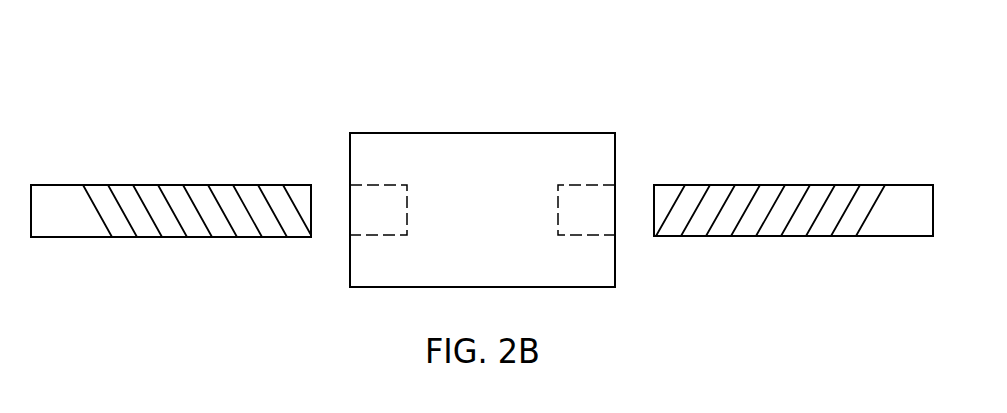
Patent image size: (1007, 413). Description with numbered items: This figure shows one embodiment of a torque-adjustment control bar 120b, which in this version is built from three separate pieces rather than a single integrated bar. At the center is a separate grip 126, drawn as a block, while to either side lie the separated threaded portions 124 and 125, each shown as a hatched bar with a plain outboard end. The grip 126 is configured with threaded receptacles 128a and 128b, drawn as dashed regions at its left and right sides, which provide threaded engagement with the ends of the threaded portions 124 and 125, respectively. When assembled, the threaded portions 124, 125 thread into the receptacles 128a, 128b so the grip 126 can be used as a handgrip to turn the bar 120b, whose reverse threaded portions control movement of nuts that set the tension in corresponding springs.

The bar 120b is at (127, 75).
The threaded portion 124 is at (197, 192).
The threaded portion 125 is at (772, 190).
The grip 126 is at (453, 133).
The threaded receptacle 128a is at (377, 183).
The threaded receptacle 128b is at (588, 183).